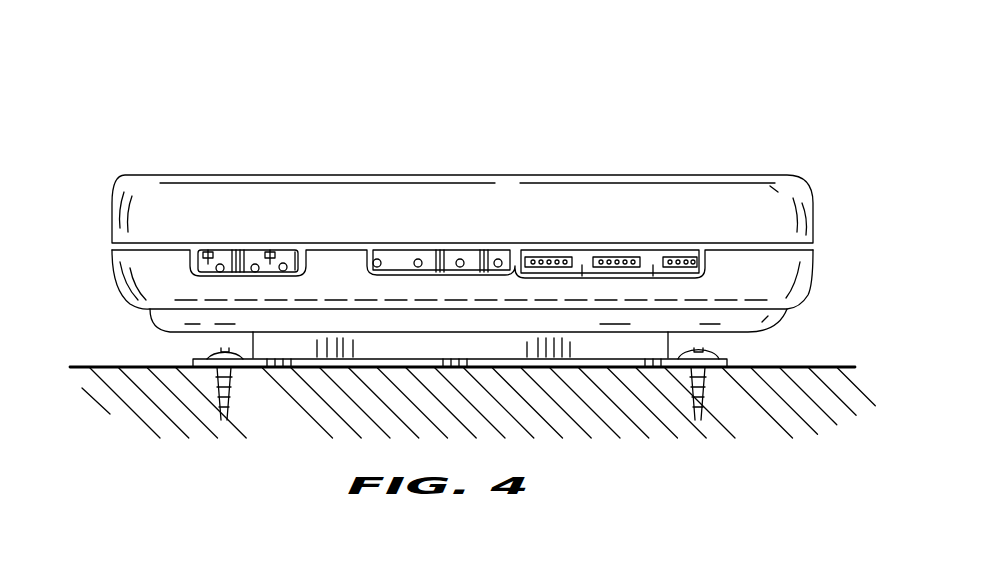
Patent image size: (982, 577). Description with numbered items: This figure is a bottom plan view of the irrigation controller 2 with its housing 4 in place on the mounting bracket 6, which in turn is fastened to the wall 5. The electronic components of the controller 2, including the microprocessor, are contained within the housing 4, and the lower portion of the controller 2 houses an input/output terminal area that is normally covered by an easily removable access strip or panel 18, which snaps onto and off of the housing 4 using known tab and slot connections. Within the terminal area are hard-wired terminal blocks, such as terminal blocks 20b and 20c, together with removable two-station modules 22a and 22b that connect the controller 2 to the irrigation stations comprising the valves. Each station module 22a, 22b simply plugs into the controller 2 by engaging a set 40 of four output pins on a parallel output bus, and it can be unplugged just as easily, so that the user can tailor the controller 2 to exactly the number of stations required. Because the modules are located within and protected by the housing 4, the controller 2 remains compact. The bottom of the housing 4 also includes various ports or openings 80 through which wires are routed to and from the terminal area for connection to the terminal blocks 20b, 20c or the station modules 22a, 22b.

The controller 2 is at (284, 167).
The housing 4 is at (678, 178).
The access panel 18 is at (776, 194).
The terminal block 20b is at (237, 248).
The terminal block 20c is at (287, 248).
The two-station module 22a is at (405, 250).
The two-station module 22b is at (483, 248).
The set of output pins 40 is at (560, 251).
The ports or openings 80 is at (244, 282).
The mounting bracket 6 is at (183, 357).
The wall 5 is at (819, 367).